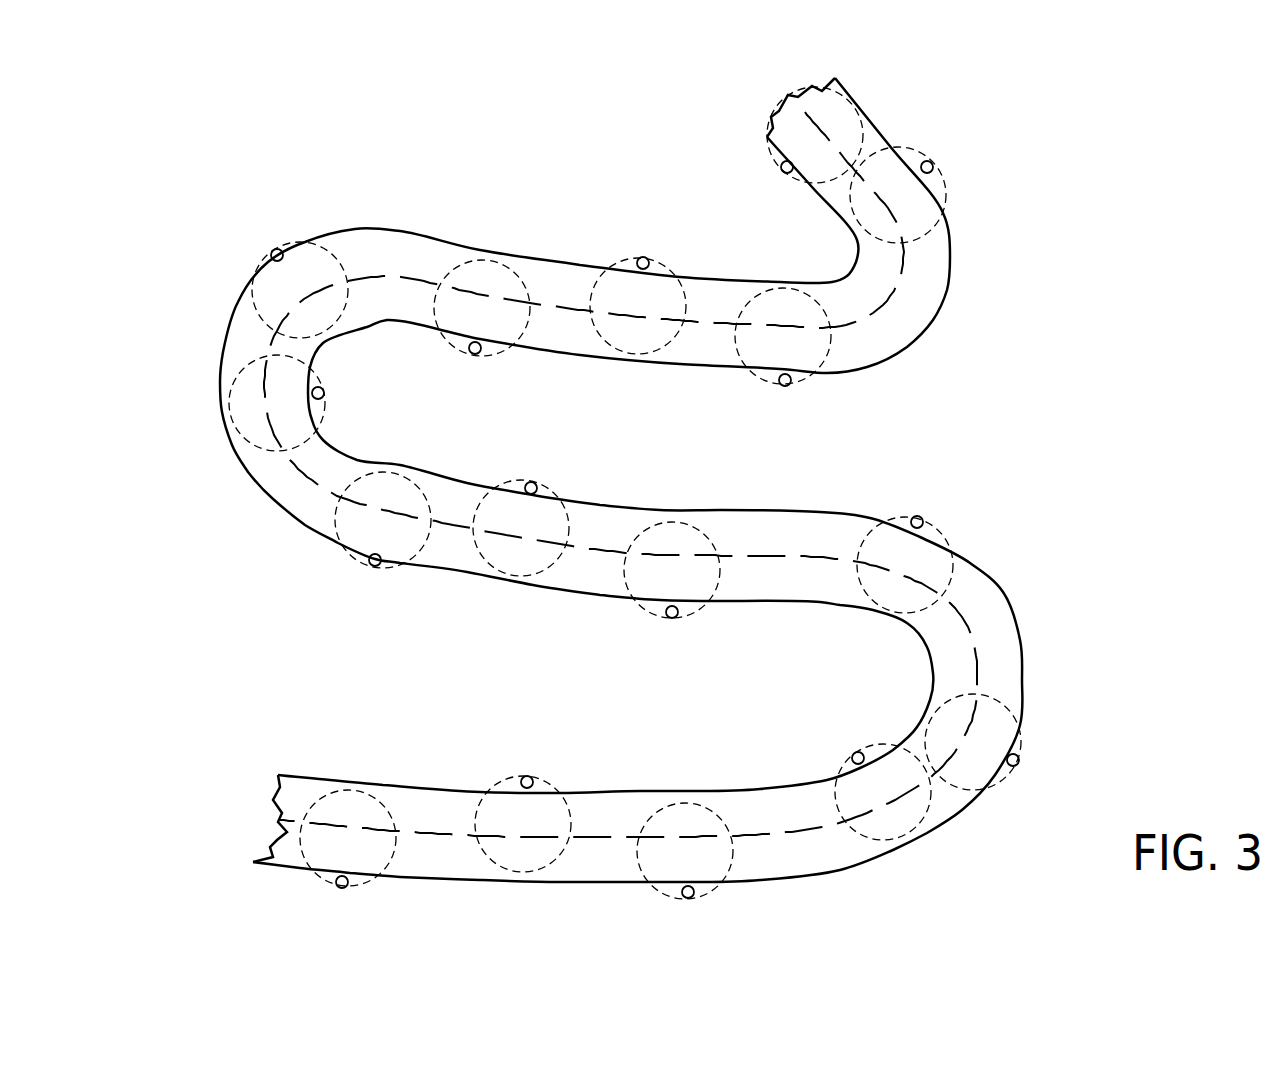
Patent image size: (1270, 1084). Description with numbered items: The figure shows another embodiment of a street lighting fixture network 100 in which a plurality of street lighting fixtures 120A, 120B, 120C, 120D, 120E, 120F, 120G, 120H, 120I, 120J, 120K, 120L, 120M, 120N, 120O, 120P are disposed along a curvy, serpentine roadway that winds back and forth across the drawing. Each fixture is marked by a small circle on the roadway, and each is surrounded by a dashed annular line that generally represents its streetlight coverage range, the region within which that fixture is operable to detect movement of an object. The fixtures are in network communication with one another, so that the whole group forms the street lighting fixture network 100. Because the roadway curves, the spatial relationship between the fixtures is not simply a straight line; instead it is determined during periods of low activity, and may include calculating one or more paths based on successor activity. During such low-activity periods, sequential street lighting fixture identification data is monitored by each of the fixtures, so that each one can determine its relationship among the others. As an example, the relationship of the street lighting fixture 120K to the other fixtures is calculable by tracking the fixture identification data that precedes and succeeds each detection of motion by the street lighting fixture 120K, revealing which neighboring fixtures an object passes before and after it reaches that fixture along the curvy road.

The street lighting fixture network 100 is at (1108, 166).
The street lighting fixture 120A is at (781, 167).
The street lighting fixture 120B is at (933, 165).
The street lighting fixture 120C is at (788, 386).
The street lighting fixture 120D is at (642, 257).
The street lighting fixture 120E is at (475, 354).
The street lighting fixture 120F is at (272, 251).
The street lighting fixture 120G is at (324, 393).
The street lighting fixture 120H is at (374, 566).
The street lighting fixture 120I is at (534, 482).
The street lighting fixture 120J is at (671, 618).
The street lighting fixture 120K is at (923, 520).
The street lighting fixture 120L is at (1018, 764).
The street lighting fixture 120M is at (858, 752).
The street lighting fixture 120N is at (694, 891).
The street lighting fixture 120O is at (526, 776).
The street lighting fixture 120P is at (336, 883).